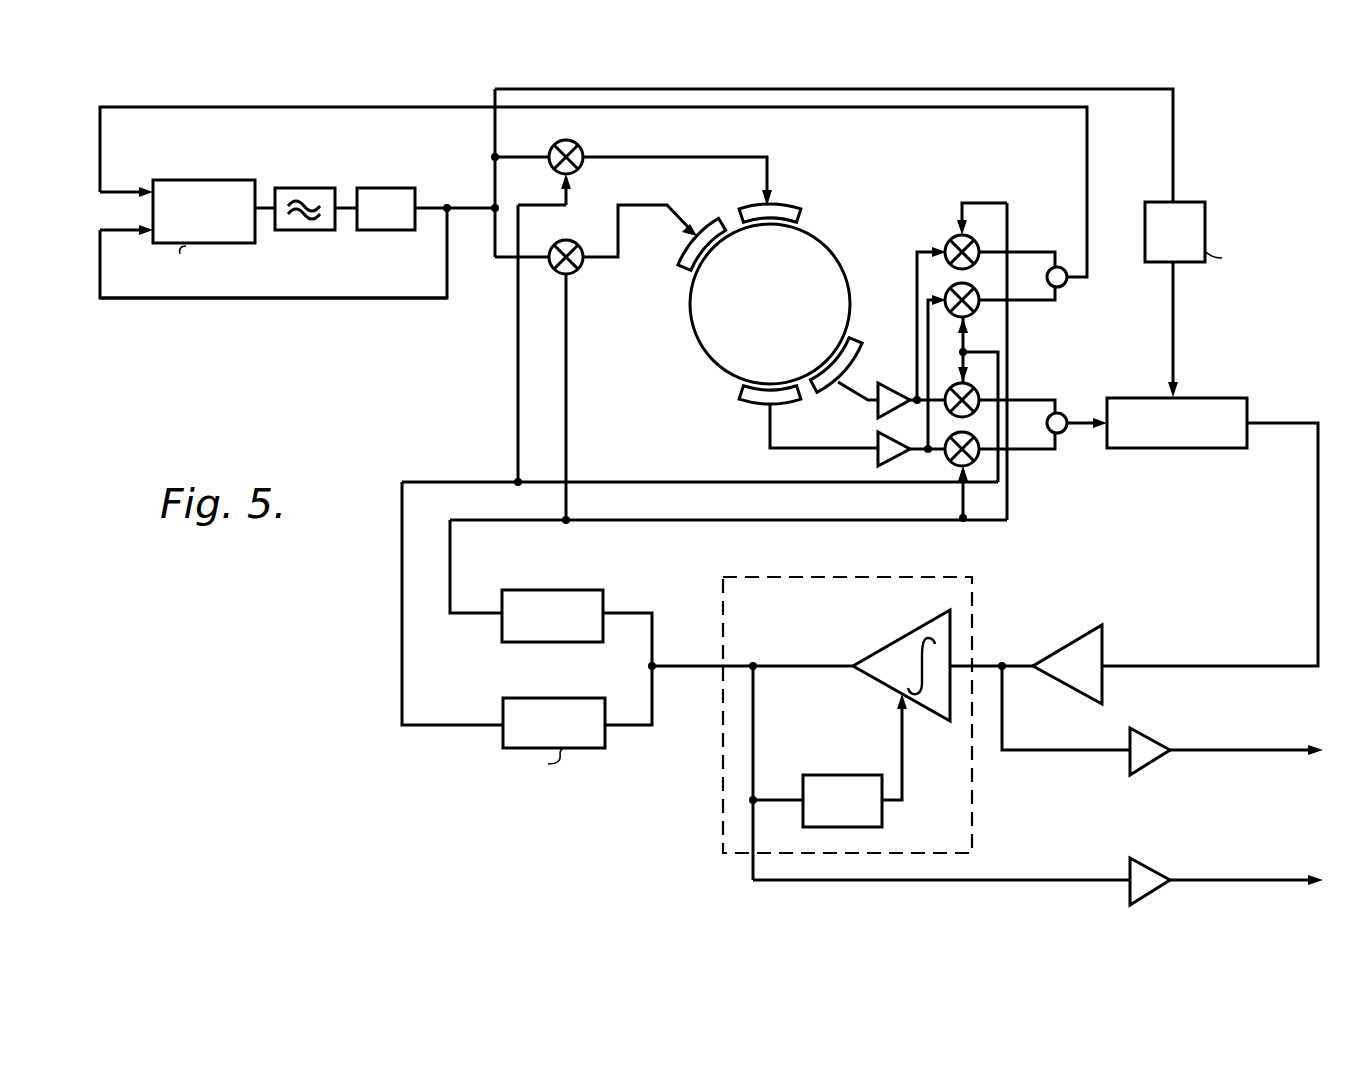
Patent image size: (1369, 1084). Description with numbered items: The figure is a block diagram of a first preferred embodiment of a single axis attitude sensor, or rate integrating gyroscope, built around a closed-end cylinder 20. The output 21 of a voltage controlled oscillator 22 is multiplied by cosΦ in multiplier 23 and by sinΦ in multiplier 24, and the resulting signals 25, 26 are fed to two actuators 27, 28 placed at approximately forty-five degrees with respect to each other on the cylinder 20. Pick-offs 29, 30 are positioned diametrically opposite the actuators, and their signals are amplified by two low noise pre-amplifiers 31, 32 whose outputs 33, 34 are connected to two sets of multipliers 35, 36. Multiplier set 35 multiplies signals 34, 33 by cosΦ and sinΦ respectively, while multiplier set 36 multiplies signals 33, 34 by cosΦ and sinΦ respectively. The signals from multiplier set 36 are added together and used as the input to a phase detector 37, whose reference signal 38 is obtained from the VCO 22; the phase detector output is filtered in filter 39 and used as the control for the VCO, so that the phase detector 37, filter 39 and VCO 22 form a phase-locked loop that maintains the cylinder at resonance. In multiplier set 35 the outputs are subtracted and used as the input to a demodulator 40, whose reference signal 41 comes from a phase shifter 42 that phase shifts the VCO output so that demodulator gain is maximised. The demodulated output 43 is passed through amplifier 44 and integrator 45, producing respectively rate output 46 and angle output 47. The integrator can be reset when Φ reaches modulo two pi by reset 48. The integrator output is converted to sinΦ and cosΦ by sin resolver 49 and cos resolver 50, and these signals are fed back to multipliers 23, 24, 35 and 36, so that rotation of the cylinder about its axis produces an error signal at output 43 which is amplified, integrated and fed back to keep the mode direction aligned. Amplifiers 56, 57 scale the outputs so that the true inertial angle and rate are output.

The closed-end cylinder 20 is at (840, 250).
The output 21 is at (469, 206).
The voltage controlled oscillator 22 is at (389, 187).
The multiplier 23 is at (582, 140).
The multiplier 24 is at (584, 268).
The resulting signal 25 is at (693, 157).
The resulting signal 26 is at (645, 208).
The actuator 27 is at (786, 204).
The actuator 28 is at (706, 218).
The pick-off 29 is at (861, 344).
The pick-off 30 is at (746, 402).
The low noise pre-amplifier 31 is at (875, 438).
The low noise pre-amplifier 32 is at (903, 384).
The pre-amplifier output 33 is at (915, 454).
The pre-amplifier output 34 is at (924, 252).
The multiplier set 35 is at (978, 388).
The multiplier set 36 is at (978, 240).
The phase detector 37 is at (218, 180).
The reference signal 38 is at (188, 300).
The filter 39 is at (312, 187).
The demodulator 40 is at (1232, 397).
The reference signal 41 is at (1174, 322).
The phase shifter 42 is at (1208, 224).
The demodulated output 43 is at (1318, 517).
The amplifier 44 is at (1060, 648).
The integrator 45 is at (890, 640).
The rate output 46 is at (1341, 750).
The angle output 47 is at (1341, 880).
The reset 48 is at (830, 775).
The sin resolver 49 is at (582, 590).
The cos resolver 50 is at (568, 698).
The amplifier 56 is at (1162, 740).
The amplifier 57 is at (1162, 870).